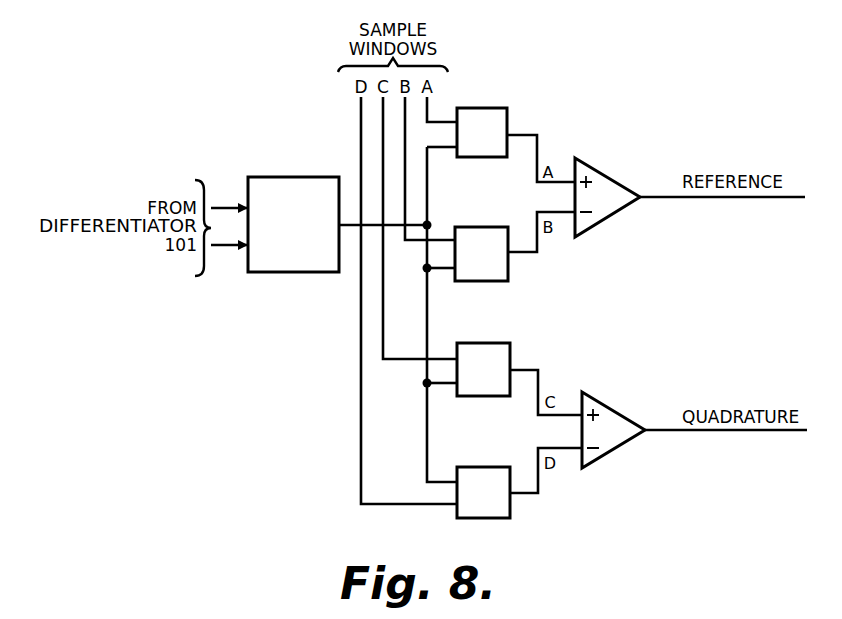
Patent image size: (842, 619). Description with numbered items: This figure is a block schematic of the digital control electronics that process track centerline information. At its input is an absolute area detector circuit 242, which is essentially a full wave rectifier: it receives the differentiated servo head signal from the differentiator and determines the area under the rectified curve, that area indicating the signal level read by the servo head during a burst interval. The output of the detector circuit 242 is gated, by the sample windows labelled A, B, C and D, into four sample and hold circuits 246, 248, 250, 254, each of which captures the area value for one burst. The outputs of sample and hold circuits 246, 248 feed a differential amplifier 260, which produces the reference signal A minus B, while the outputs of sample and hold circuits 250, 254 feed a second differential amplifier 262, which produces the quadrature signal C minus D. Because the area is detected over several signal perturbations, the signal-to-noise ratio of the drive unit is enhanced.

The absolute area detector circuit 242 is at (273, 177).
The sample and hold circuit 246 is at (486, 108).
The sample and hold circuit 248 is at (468, 227).
The sample and hold circuit 250 is at (482, 343).
The sample and hold circuit 254 is at (470, 467).
The differential amplifier 260 is at (598, 175).
The differential amplifier 262 is at (605, 406).